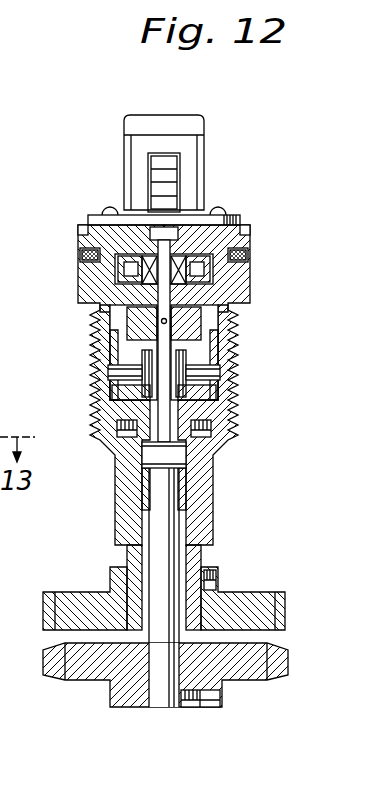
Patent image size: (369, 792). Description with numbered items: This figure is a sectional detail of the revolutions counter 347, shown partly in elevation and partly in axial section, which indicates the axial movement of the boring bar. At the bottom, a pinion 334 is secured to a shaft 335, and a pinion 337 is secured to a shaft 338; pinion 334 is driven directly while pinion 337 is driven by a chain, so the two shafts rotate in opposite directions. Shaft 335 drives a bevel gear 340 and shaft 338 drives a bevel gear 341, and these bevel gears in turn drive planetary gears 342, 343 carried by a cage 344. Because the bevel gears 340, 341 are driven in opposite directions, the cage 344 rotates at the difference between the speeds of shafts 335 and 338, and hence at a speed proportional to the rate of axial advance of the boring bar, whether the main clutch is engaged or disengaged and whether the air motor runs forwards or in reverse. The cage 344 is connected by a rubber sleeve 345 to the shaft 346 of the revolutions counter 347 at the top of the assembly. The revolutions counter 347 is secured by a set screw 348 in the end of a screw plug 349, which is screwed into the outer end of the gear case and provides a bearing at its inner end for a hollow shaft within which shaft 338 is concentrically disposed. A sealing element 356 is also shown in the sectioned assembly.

The revolutions counter 347 is at (205, 142).
The shaft 346 is at (142, 222).
The rubber sleeve 345 is at (185, 248).
The set screw 348 is at (82, 256).
The screw plug 349 is at (82, 283).
The seal assembly 356 is at (215, 271).
The cage 344 is at (110, 315).
The bevel gear 341 is at (190, 333).
The planetary gear 342 is at (115, 395).
The planetary gear 343 is at (223, 390).
The bevel gear 340 is at (190, 418).
The shaft 335 is at (193, 552).
The pinion 334 is at (230, 593).
The pinion 337 is at (250, 675).
The shaft 338 is at (165, 697).